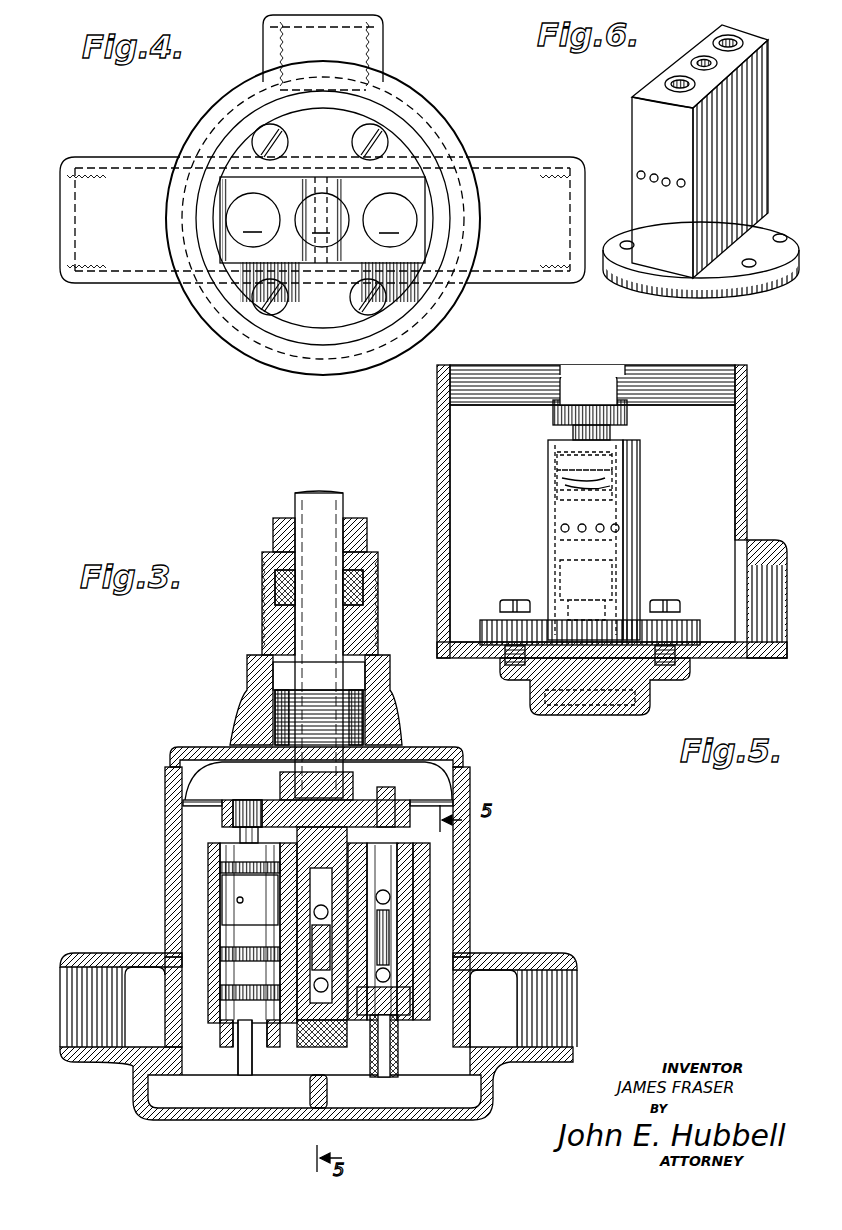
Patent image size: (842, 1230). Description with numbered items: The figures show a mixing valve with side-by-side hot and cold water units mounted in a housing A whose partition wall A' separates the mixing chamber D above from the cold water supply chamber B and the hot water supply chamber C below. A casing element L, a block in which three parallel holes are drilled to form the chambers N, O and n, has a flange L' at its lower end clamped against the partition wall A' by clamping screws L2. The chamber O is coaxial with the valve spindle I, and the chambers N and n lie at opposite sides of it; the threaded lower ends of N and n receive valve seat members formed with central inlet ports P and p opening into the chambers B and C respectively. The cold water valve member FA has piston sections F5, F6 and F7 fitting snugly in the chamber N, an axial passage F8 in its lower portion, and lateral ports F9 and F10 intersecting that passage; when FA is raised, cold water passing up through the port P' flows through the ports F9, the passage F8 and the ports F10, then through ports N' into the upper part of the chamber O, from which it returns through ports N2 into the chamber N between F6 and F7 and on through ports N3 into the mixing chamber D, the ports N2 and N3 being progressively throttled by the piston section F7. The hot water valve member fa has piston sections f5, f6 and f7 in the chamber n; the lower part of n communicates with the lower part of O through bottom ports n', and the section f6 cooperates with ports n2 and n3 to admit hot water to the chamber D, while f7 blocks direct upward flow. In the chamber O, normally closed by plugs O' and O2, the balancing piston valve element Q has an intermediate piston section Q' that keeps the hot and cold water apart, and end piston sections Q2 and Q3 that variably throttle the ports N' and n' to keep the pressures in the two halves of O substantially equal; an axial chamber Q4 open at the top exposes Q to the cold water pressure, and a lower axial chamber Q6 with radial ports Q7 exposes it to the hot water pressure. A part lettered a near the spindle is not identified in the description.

In FIG. 4, the housing A is at (323, 195).
In FIG. 5, the housing A is at (612, 540).
In FIG. 3, the housing A is at (318, 933).
In FIG. 5, the partition wall A' is at (573, 711).
In FIG. 3, the partition wall A' is at (158, 1101).
In FIG. 4, the cold water supply chamber B is at (497, 172).
In FIG. 3, the cold water supply chamber B is at (487, 1060).
In FIG. 4, the hot water supply chamber C is at (140, 166).
In FIG. 5, the hot water supply chamber C is at (612, 690).
In FIG. 3, the hot water supply chamber C is at (138, 1050).
In FIG. 4, the mixing chamber D is at (380, 134).
In FIG. 5, the mixing chamber D is at (465, 437).
In FIG. 3, the mixing chamber D is at (188, 820).
In FIG. 3, the valve spindle I is at (296, 500).
In FIG. 3, the packing nut neck a is at (247, 672).
In FIG. 4, the casing element L is at (287, 259).
In FIG. 6, the casing element L is at (715, 151).
In FIG. 5, the casing element L is at (622, 502).
In FIG. 3, the casing element L is at (438, 909).
In FIG. 4, the flange L' is at (264, 336).
In FIG. 6, the flange L' is at (703, 243).
In FIG. 5, the flange L' is at (589, 606).
In FIG. 4, the clamping screws L2 is at (375, 308).
In FIG. 5, the clamping screws L2 is at (518, 600).
In FIG. 4, the valve casing chamber n is at (253, 220).
In FIG. 6, the valve casing chamber n is at (653, 79).
In FIG. 3, the valve casing chamber n is at (186, 933).
In FIG. 3, the bottom ports n' is at (222, 1088).
In FIG. 3, the ports n2 is at (280, 970).
In FIG. 3, the ports n3 is at (213, 968).
In FIG. 4, the valve casing chamber N is at (390, 220).
In FIG. 6, the valve casing chamber N is at (738, 28).
In FIG. 3, the valve casing chamber N is at (444, 879).
In FIG. 5, the ports N' is at (555, 484).
In FIG. 3, the ports N' is at (412, 775).
In FIG. 3, the ports N2 is at (433, 903).
In FIG. 6, the ports N3 is at (681, 179).
In FIG. 5, the ports N3 is at (580, 524).
In FIG. 3, the ports N3 is at (433, 917).
In FIG. 4, the chamber O is at (322, 220).
In FIG. 6, the chamber O is at (683, 57).
In FIG. 3, the chamber O is at (457, 923).
In FIG. 3, the plug O' is at (261, 776).
In FIG. 3, the plug O2 is at (355, 1067).
In FIG. 3, the inlet port P is at (457, 1110).
In FIG. 3, the port P' is at (340, 1109).
In FIG. 3, the inlet port p is at (300, 1052).
In FIG. 3, the balancing piston valve element Q is at (407, 937).
In FIG. 3, the intermediate piston section Q' is at (229, 919).
In FIG. 3, the piston section portion Q2 is at (223, 888).
In FIG. 3, the piston section portion Q3 is at (302, 1050).
In FIG. 3, the axial chamber Q4 is at (338, 838).
In FIG. 3, the axial chamber Q6 is at (330, 1080).
In FIG. 3, the radial ports Q7 is at (412, 998).
In FIG. 3, the valve member fa is at (238, 838).
In FIG. 3, the piston section f5 is at (220, 868).
In FIG. 3, the piston section f6 is at (225, 957).
In FIG. 3, the piston section f7 is at (222, 1002).
In FIG. 3, the valve member FA is at (425, 852).
In FIG. 5, the piston section F5 is at (620, 447).
In FIG. 3, the piston section F5 is at (430, 858).
In FIG. 5, the piston section F6 is at (625, 478).
In FIG. 3, the piston section F6 is at (433, 897).
In FIG. 5, the piston section F7 is at (640, 537).
In FIG. 3, the piston section F7 is at (433, 963).
In FIG. 3, the axial passage F8 is at (433, 952).
In FIG. 3, the lateral ports F9 is at (497, 972).
In FIG. 3, the lateral ports F10 is at (433, 887).